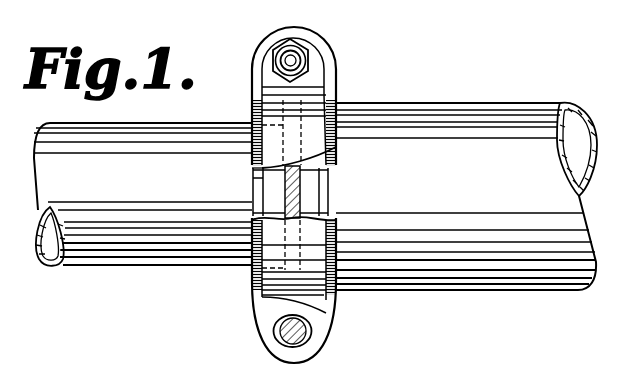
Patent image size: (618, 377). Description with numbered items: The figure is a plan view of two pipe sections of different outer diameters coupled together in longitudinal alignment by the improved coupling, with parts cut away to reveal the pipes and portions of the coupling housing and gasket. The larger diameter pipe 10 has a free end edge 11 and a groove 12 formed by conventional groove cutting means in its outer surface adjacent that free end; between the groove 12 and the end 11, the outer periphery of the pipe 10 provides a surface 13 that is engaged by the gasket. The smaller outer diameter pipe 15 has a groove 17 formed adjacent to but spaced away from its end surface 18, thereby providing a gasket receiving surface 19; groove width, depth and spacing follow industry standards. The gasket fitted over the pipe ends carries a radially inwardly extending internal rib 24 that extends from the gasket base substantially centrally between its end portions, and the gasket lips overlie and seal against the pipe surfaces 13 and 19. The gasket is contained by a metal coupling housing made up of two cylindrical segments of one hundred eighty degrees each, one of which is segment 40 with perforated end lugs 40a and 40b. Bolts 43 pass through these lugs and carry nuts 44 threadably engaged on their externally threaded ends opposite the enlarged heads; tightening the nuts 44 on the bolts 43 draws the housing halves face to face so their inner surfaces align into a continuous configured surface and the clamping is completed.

The larger diameter pipe 10 is at (457, 115).
The smaller outer diameter pipe 15 is at (125, 265).
The free end edge 11 is at (325, 174).
The groove 12 is at (328, 203).
The gasket engaging surface 13 is at (337, 101).
The groove 17 is at (258, 192).
The end surface 18 is at (253, 178).
The gasket receiving surface 19 is at (270, 137).
The internal rib 24 is at (336, 147).
The coupling housing segment 40 is at (270, 100).
The end lug 40a is at (274, 38).
The end lug 40b is at (268, 343).
The bolt 43 is at (300, 50).
The nut 44 is at (306, 55).